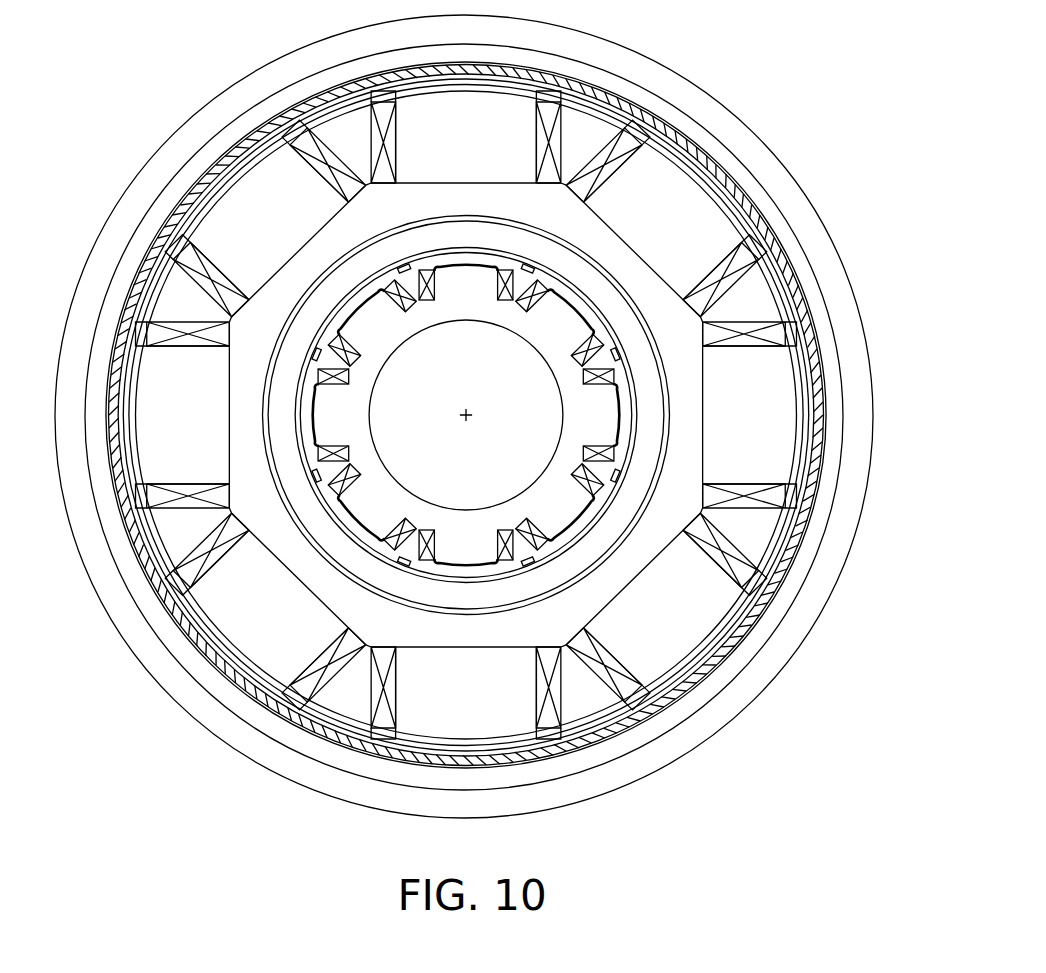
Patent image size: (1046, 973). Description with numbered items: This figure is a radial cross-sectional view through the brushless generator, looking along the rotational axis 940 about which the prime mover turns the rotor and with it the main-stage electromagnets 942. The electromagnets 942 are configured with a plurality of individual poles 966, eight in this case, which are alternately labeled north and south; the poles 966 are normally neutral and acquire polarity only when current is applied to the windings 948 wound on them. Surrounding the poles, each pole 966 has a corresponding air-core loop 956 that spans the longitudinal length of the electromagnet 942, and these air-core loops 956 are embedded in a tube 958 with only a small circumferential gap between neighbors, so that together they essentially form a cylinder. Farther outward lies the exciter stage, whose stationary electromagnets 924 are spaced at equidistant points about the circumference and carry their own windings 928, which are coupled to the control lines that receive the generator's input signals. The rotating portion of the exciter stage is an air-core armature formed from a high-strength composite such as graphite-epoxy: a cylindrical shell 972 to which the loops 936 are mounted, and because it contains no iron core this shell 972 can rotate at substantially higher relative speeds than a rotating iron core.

The poles 966 is at (512, 103).
The windings 928 is at (628, 128).
The loops 936 is at (735, 188).
The cylindrical shell 972 is at (790, 272).
The electromagnets 924 is at (775, 375).
The electromagnets 942 is at (619, 394).
The windings 948 is at (606, 467).
The tube 958 is at (582, 538).
The air-core loop 956 is at (382, 293).
The rotational axis 940 is at (469, 413).